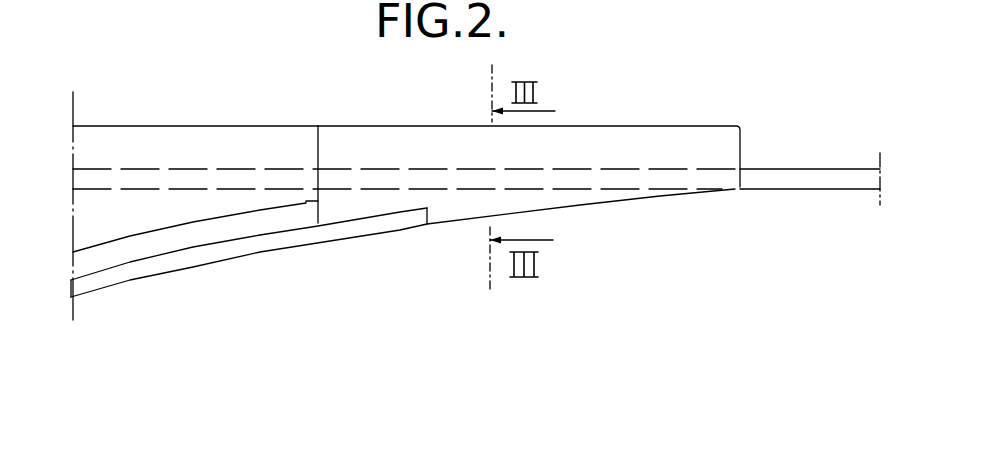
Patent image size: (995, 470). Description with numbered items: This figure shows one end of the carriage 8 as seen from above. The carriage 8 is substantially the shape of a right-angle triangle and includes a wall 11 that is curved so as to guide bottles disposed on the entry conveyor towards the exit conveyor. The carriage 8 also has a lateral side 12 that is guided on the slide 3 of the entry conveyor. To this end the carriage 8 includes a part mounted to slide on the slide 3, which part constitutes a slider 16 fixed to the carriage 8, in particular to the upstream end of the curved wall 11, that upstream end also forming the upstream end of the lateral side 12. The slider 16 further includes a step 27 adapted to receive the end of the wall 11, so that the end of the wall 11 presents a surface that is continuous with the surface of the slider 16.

The carriage 8 is at (212, 126).
The lateral side 12 is at (291, 126).
The slider 16 is at (585, 158).
The slide 3 is at (797, 180).
The wall 11 is at (252, 245).
The step 27 is at (422, 213).